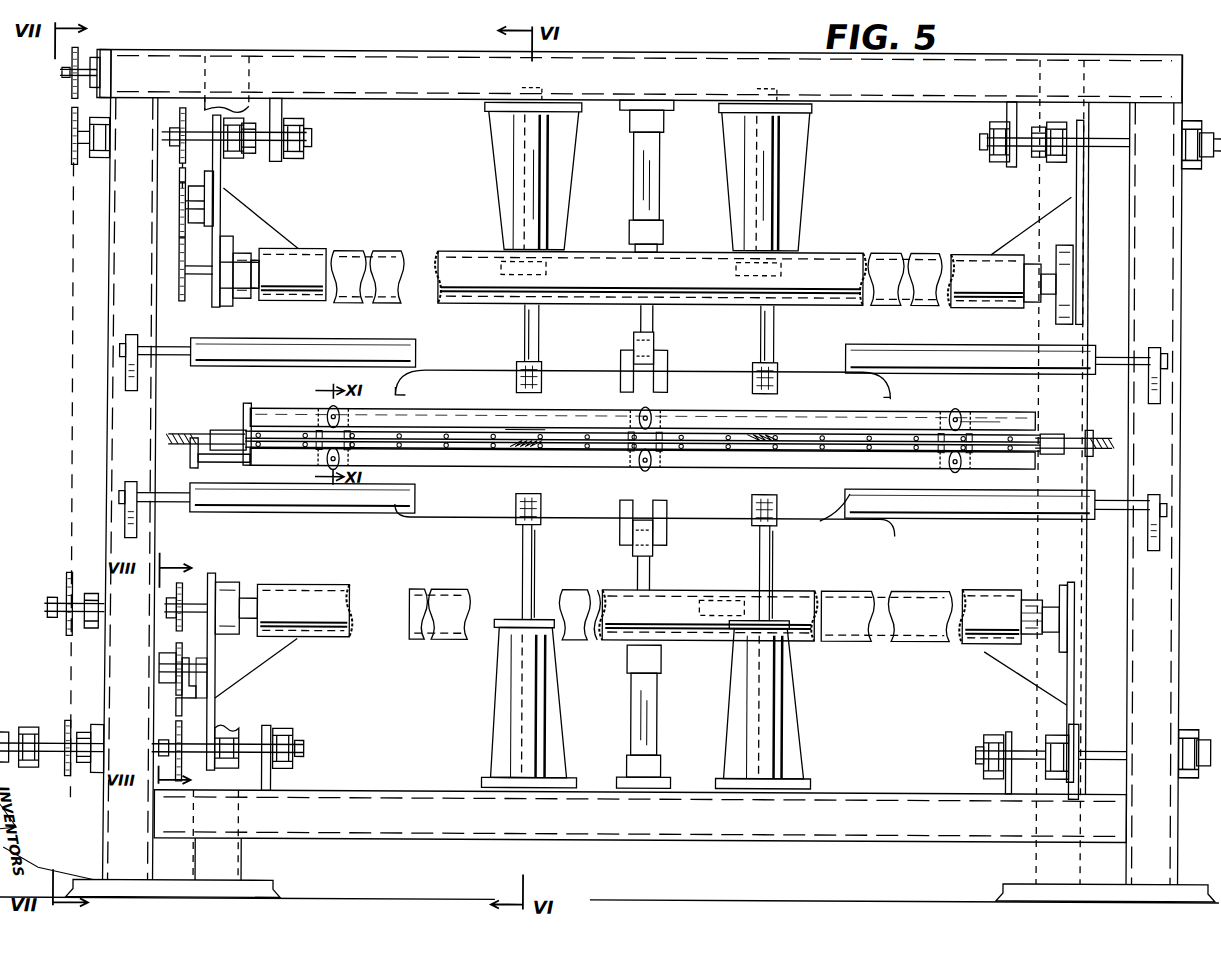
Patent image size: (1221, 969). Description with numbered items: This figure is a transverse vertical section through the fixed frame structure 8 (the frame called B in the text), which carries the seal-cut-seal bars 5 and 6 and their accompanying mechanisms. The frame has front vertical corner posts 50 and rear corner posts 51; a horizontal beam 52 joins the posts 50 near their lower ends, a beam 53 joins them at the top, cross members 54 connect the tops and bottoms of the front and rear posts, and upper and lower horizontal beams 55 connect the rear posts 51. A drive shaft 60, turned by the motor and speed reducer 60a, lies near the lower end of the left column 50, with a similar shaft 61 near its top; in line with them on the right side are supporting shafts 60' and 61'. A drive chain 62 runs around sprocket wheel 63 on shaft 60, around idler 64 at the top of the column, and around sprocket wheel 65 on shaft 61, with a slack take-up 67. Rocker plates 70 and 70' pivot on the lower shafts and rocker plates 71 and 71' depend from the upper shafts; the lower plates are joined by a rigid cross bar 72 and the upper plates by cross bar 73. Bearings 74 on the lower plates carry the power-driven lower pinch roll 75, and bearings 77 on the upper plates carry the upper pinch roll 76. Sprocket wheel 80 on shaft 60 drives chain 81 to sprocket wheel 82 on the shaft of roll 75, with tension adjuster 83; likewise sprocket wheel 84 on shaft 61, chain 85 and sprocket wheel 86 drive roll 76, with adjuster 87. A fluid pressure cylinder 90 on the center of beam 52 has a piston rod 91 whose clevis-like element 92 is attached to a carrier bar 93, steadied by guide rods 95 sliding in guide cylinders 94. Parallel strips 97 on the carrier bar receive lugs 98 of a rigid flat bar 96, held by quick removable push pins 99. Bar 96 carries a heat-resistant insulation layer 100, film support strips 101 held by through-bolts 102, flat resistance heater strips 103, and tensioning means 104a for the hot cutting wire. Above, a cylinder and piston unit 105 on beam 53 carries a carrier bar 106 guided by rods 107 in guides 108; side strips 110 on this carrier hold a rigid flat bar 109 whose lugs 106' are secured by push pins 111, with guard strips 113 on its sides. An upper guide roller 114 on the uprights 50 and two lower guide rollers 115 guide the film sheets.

The seal-cut-seal bar 5 is at (458, 370).
The seal-cut-seal bar 6 is at (490, 520).
The frame assembly 8 is at (378, 54).
The front corner post 50 is at (155, 333).
The rear corner post 51 is at (242, 732).
The lower horizontal beam 52 is at (388, 800).
The upper beam 53 is at (375, 98).
The cross member 54 is at (232, 62).
The horizontal beam 55 is at (375, 255).
The drive shaft 60 is at (302, 739).
The supporting shaft 60' is at (995, 755).
The drive motor and speed reducer 60a is at (10, 730).
The upper shaft 61 is at (255, 130).
The supporting shaft 61' is at (1054, 149).
The drive chain 62 is at (70, 412).
The sprocket wheel 63 is at (66, 728).
The idler 64 is at (68, 92).
The sprocket wheel 65 is at (70, 133).
The slack take-up 67 is at (66, 588).
The rocker plate 70 is at (256, 668).
The rocker plate 70' is at (1050, 678).
The rocker plate 71 is at (255, 211).
The rocker plate 71' is at (1060, 222).
The cross bar 72 is at (410, 592).
The cross bar 73 is at (330, 255).
The bearing 74 is at (222, 580).
The lower pinch roll 75 is at (330, 590).
The upper pinch roll 76 is at (470, 252).
The bearing 77 is at (243, 300).
The sprocket wheel 80 is at (177, 742).
The chain 81 is at (177, 705).
The sprocket wheel 82 is at (178, 604).
The chain tension adjustment 83 is at (177, 658).
The sprocket wheel 84 is at (178, 122).
The chain 85 is at (180, 176).
The sprocket wheel 86 is at (178, 252).
The chain tension adjuster 87 is at (178, 215).
The fluid pressure cylinder 90 is at (655, 708).
The piston rod 91 is at (652, 575).
The clevis-like element 92 is at (668, 520).
The carrier bar 93 is at (824, 520).
The guide cylinder 94 is at (510, 685).
The guide rod 95 is at (538, 575).
The rigid flat bar 96 is at (535, 450).
The strip 97 is at (588, 455).
The lug 98 is at (318, 465).
The push pin 99 is at (342, 460).
The insulation layer 100 is at (520, 452).
The film sheet support strip 101 is at (285, 458).
The through-bolt 102 is at (785, 455).
The heater strip 103 is at (528, 430).
The tensioning means 104a is at (186, 436).
The cylinder and piston unit 105 is at (658, 186).
The carrier bar 106 is at (646, 349).
The lug 106' is at (614, 429).
The guide rod 107 is at (522, 312).
The guide 108 is at (515, 142).
The rigid flat bar 109 is at (765, 438).
The side strip 110 is at (576, 412).
The push pin 111 is at (342, 418).
The guard strip 113 is at (252, 410).
The upper guide roller 114 is at (300, 366).
The lower guide roller 115 is at (312, 512).